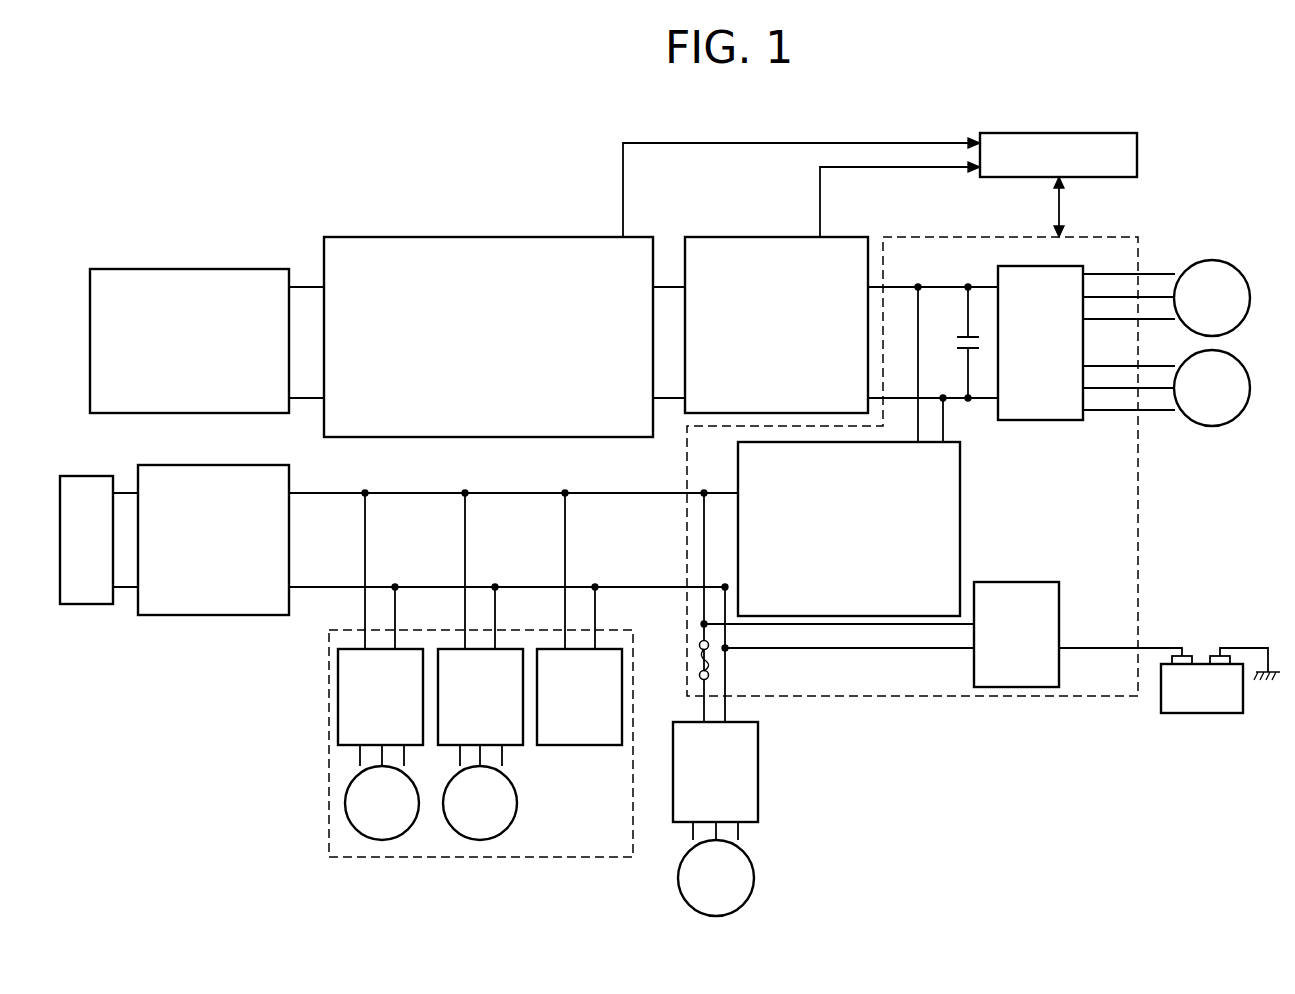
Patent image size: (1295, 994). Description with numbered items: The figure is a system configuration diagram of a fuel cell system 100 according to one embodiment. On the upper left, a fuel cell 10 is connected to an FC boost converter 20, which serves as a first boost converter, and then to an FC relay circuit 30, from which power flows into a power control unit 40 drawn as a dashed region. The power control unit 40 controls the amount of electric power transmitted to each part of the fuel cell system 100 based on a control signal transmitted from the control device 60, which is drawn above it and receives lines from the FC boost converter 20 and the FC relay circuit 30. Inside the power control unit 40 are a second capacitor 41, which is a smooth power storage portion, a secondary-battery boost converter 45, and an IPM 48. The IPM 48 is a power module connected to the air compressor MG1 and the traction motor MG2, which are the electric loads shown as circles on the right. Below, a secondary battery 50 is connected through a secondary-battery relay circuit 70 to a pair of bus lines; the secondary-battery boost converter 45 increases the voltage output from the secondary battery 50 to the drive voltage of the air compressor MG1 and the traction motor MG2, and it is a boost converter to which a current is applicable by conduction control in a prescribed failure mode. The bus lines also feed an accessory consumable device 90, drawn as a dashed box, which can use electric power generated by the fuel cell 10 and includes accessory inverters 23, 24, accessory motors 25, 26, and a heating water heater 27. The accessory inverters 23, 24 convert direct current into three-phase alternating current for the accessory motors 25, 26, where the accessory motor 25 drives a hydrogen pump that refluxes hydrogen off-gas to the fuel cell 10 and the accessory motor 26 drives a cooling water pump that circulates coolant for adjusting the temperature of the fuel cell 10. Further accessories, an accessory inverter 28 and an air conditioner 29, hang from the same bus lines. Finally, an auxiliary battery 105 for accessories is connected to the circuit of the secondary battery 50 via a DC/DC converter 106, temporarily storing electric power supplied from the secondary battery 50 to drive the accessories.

The fuel cell system 100 is at (1176, 163).
The fuel cell 10 is at (190, 269).
The FC boost converter 20 is at (498, 237).
The FC relay circuit 30 is at (775, 237).
The power control unit 40 is at (1003, 237).
The second capacitor 41 is at (969, 332).
The secondary-battery boost converter 45 is at (960, 468).
The IPM 48 is at (1070, 266).
The control device 60 is at (1130, 177).
The air compressor MG1 is at (1212, 260).
The traction motor MG2 is at (1212, 426).
The secondary battery 50 is at (84, 605).
The secondary-battery relay circuit 70 is at (210, 617).
The accessory consumable device 90 is at (329, 792).
The accessory inverter 23 is at (338, 707).
The accessory inverter 24 is at (523, 733).
The accessory motor 25 is at (382, 840).
The accessory motor 26 is at (480, 840).
The heating water heater 27 is at (622, 698).
The accessory inverter 28 is at (758, 766).
The air conditioner 29 is at (754, 876).
The auxiliary battery 105 is at (1203, 713).
The DC/DC converter 106 is at (1042, 582).